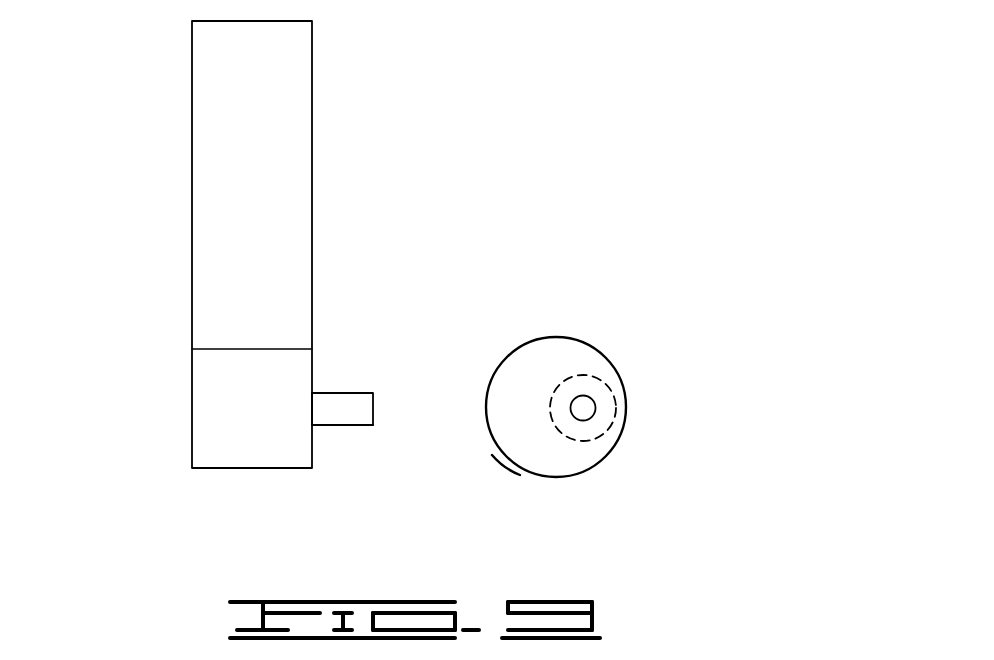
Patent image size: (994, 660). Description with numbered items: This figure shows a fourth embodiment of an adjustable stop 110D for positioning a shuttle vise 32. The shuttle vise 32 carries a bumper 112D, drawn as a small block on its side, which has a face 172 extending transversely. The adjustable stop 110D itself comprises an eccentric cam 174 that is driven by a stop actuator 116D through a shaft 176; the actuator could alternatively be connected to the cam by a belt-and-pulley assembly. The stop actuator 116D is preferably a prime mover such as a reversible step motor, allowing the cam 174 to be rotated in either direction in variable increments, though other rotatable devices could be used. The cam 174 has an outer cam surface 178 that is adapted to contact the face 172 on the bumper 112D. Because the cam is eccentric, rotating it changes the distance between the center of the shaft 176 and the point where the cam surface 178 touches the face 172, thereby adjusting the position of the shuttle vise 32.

The shuttle vise 32 is at (213, 132).
The fourth embodiment adjustable stop 110D is at (476, 210).
The bumper 112D is at (343, 420).
The face 172 is at (375, 408).
The eccentric cam 174 is at (558, 352).
The shaft 176 is at (587, 405).
The outer cam surface 178 is at (510, 462).
The fourth embodiment stop actuator 116D is at (580, 440).